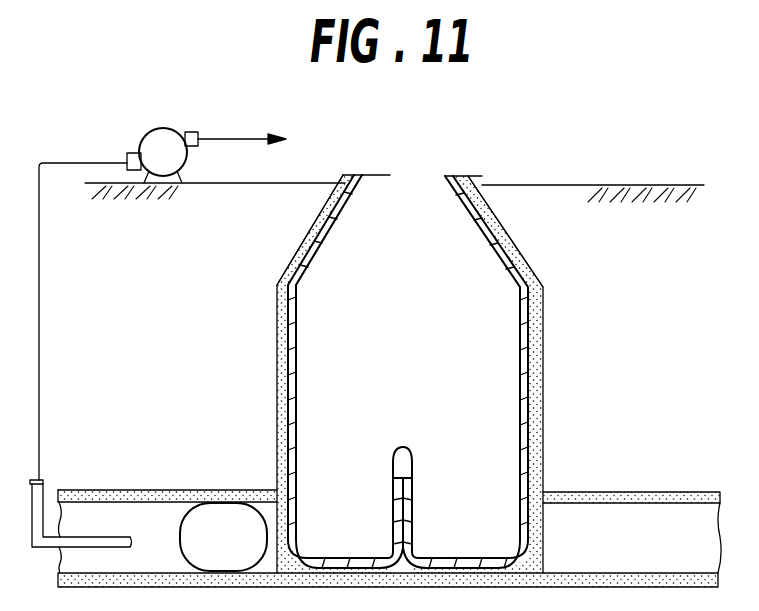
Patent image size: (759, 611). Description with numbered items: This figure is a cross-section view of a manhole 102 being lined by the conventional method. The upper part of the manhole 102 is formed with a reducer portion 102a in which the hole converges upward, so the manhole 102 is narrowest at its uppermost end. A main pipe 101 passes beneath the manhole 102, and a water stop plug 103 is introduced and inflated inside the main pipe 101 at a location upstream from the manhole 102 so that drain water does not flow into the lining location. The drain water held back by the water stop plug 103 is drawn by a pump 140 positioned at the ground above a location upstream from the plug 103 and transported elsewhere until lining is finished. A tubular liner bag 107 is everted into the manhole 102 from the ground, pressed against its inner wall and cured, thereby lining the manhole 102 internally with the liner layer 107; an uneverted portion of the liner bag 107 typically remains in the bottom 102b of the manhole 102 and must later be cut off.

The pump 140 is at (166, 129).
The water stop plug 103 is at (182, 521).
The tubular liner bag 107 is at (520, 342).
The reducer portion 102a is at (530, 258).
The manhole 102 is at (448, 374).
The main pipe 101 is at (622, 491).
The bottom of the manhole 102b is at (455, 562).